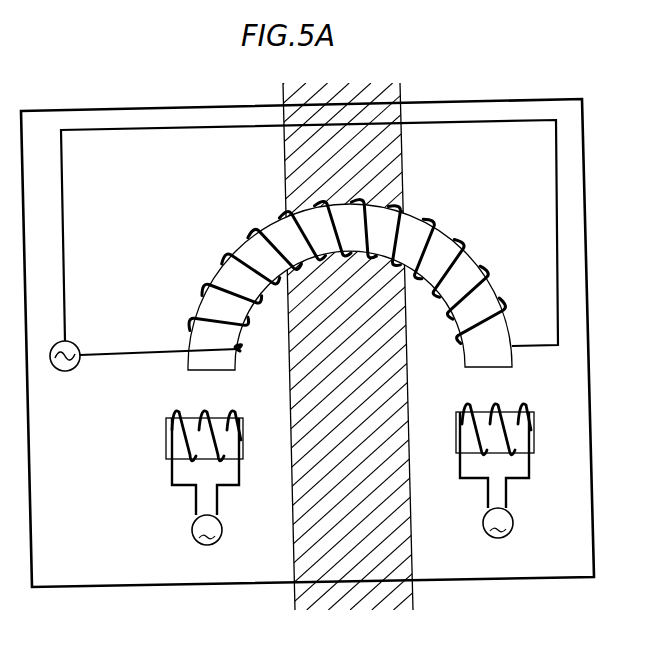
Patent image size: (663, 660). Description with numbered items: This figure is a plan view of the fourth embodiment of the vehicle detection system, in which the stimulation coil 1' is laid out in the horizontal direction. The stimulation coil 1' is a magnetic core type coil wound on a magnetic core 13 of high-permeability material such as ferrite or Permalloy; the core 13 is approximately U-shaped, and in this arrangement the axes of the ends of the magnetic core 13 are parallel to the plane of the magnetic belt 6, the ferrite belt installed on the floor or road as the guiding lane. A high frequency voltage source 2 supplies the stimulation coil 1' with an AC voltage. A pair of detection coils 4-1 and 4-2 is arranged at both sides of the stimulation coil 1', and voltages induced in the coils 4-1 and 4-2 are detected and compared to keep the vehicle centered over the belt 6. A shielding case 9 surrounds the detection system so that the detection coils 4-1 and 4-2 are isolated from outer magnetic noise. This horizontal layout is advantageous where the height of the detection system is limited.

The magnetic core type coil 1' is at (350, 261).
The magnetic core 13 is at (470, 270).
The high frequency voltage source 2 is at (56, 344).
The detection coil 4-1 is at (168, 430).
The detection coil 4-2 is at (532, 418).
The magnetic belt 6 is at (408, 480).
The shielding case 9 is at (590, 418).